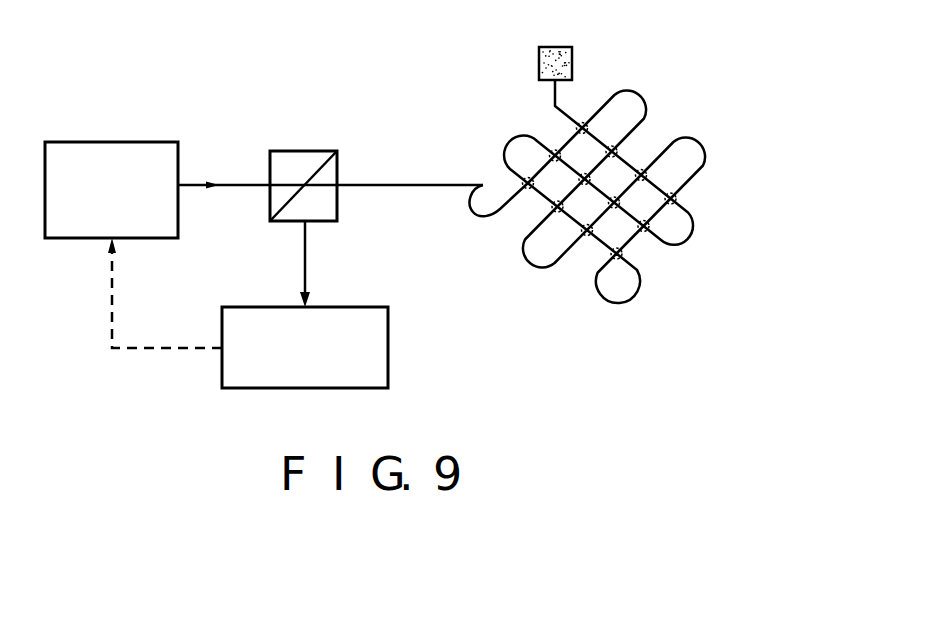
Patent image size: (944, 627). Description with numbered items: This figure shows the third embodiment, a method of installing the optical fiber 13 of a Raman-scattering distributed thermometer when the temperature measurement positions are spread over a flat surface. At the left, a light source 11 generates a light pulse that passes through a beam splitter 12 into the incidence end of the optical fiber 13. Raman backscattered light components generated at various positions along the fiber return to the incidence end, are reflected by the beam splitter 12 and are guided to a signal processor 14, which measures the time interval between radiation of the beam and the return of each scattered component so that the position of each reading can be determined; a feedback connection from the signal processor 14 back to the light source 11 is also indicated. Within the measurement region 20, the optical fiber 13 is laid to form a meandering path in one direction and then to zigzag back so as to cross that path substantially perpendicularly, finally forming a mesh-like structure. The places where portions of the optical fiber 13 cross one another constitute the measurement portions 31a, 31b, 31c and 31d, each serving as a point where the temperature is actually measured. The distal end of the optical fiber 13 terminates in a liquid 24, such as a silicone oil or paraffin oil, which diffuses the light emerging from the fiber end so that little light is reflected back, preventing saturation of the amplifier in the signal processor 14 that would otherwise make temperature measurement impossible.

The light source 11 is at (108, 142).
The beam splitter 12 is at (305, 151).
The optical fiber 13 is at (393, 188).
The signal processor 14 is at (388, 348).
The measurement region 20 is at (697, 203).
The liquid 24 is at (539, 61).
The measurement portion 31a is at (528, 187).
The measurement portion 31b is at (555, 156).
The measurement portion 31c is at (584, 126).
The measurement portion 31d is at (614, 151).